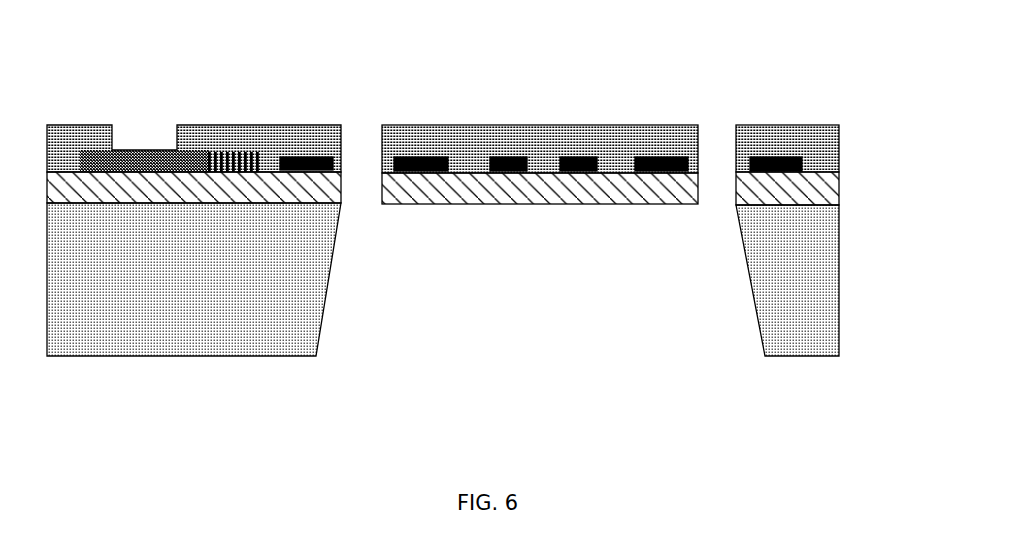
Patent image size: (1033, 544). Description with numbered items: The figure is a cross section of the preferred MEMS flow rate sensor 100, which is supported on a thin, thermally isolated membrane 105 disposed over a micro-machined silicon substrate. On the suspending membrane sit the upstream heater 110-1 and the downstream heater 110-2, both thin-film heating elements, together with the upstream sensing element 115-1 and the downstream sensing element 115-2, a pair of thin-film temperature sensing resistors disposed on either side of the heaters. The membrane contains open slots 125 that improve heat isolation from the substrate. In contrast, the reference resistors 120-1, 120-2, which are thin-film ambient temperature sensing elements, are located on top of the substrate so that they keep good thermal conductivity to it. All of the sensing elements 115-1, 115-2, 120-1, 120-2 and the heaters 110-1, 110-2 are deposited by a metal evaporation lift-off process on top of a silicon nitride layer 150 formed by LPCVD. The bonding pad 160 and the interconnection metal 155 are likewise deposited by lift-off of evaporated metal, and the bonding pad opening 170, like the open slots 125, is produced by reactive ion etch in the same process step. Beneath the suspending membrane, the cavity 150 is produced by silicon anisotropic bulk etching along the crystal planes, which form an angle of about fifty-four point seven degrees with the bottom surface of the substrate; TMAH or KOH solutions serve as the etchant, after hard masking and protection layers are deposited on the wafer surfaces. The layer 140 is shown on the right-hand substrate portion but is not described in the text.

The flow rate sensor 100 is at (843, 269).
The membrane 105 is at (546, 186).
The upstream heater 110-1 is at (497, 142).
The downstream heater 110-2 is at (573, 142).
The upstream sensing element 115-1 is at (405, 142).
The downstream sensing element 115-2 is at (650, 142).
The reference resistor 120-1 is at (307, 157).
The reference resistor 120-2 is at (773, 150).
The open slots 125 is at (712, 140).
The dielectric layer 140 is at (837, 182).
The silicon nitride layer 150 is at (468, 310).
The interconnection metal 155 is at (238, 172).
The bonding pad 160 is at (142, 152).
The bonding pad opening 170 is at (162, 130).